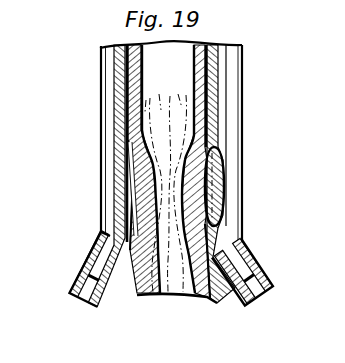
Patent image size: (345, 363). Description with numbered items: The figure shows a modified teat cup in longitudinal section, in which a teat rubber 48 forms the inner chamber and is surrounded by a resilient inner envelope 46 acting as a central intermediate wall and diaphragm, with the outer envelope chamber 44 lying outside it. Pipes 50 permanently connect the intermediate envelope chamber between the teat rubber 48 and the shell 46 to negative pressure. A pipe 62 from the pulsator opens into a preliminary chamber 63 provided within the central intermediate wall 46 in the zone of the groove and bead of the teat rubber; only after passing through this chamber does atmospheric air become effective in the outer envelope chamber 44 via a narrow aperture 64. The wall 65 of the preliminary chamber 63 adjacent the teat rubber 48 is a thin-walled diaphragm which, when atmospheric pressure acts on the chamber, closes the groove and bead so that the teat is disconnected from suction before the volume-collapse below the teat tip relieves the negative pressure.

The outer envelope chamber 44 is at (114, 97).
The resilient inner envelope 46 is at (123, 68).
The teat rubber 48 is at (199, 57).
The pipes 50 is at (245, 298).
The pipe 62 is at (92, 296).
The preliminary chamber 63 is at (238, 184).
The narrow aperture 64 is at (126, 131).
The wall 65 is at (136, 191).